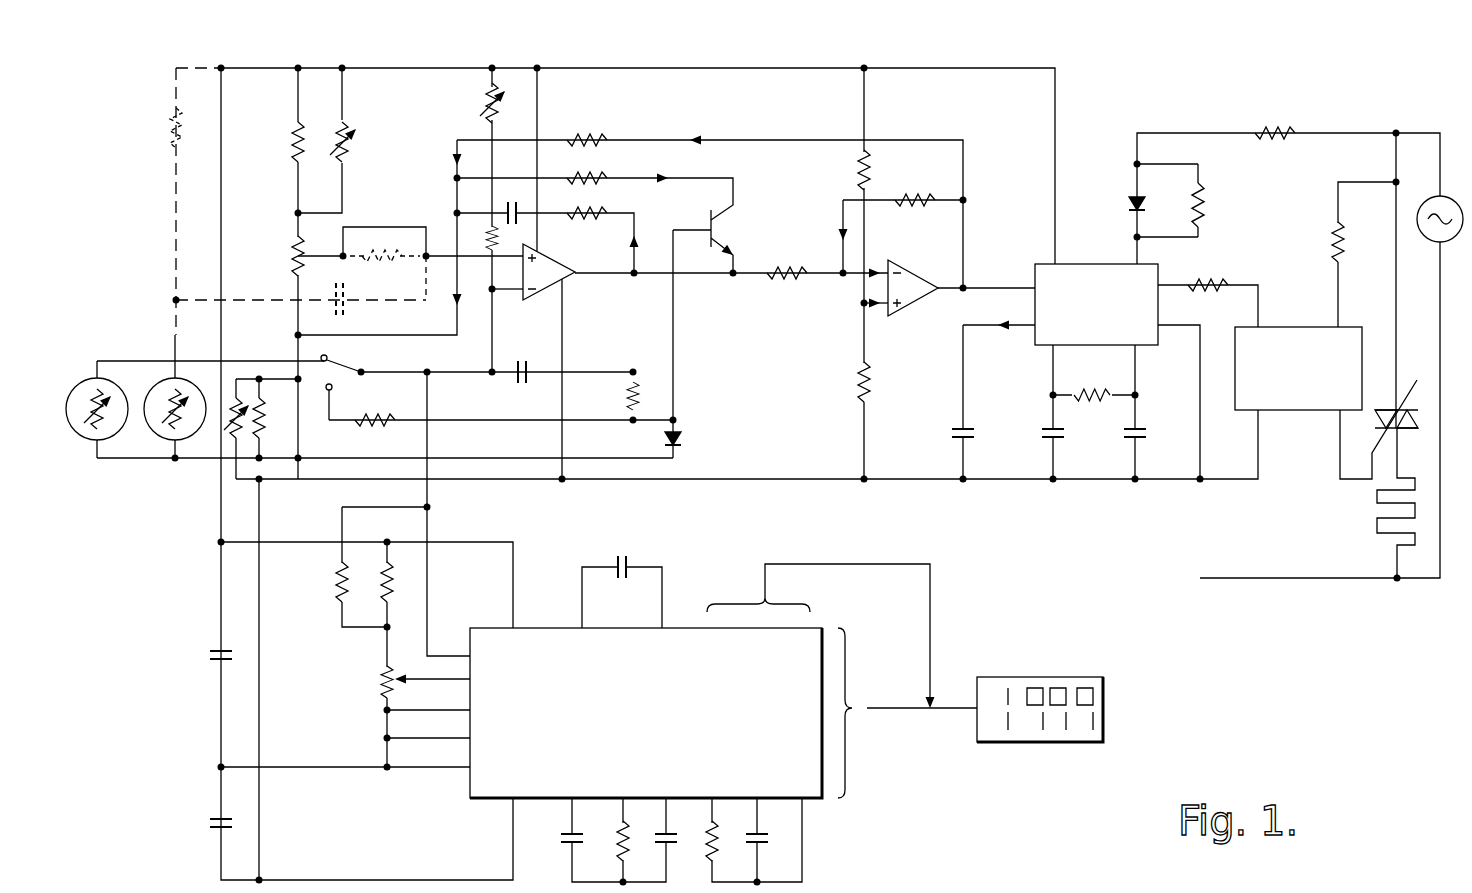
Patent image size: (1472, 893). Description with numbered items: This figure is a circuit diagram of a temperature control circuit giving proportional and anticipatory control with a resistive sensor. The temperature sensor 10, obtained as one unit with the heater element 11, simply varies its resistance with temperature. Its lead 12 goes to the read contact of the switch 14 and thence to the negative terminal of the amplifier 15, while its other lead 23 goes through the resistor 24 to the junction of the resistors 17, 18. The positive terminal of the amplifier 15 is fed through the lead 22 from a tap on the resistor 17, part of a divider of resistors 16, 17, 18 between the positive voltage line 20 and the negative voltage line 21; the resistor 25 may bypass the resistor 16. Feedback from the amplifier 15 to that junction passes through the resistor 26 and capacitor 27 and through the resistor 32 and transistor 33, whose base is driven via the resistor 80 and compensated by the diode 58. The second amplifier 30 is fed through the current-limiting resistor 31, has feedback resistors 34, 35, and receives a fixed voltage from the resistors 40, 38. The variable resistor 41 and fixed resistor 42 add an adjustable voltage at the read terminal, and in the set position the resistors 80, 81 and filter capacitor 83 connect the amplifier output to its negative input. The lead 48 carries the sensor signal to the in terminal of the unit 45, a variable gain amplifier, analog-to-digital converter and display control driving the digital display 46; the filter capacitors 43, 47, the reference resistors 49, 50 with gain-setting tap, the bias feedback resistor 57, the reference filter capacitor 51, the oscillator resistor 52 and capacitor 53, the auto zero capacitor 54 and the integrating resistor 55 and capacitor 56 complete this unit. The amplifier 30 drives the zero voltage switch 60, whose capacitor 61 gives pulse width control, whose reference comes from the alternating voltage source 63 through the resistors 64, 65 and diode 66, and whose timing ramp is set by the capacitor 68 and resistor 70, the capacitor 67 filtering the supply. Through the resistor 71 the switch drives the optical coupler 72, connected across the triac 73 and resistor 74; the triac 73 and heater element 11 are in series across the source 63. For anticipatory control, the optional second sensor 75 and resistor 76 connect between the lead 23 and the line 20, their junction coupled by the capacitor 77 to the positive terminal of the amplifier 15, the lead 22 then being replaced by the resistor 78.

The temperature sensor 10 is at (113, 385).
The heater element 11 is at (1377, 505).
The lead 12 is at (232, 360).
The switch 14 is at (372, 383).
The amplifier 15 is at (563, 278).
The resistor 16 is at (296, 138).
The resistor 17 is at (296, 256).
The resistor 18 is at (236, 442).
The positive voltage line 20 is at (655, 67).
The negative voltage line 21 is at (775, 482).
The lead 22 is at (370, 226).
The lead 23 is at (208, 458).
The resistor 24 is at (236, 395).
The resistor 25 is at (352, 148).
The resistor 26 is at (592, 226).
The capacitor 27 is at (516, 202).
The second amplifier 30 is at (900, 300).
The current-limiting resistor 31 is at (780, 282).
The resistor 32 is at (590, 180).
The transistor 33 is at (713, 228).
The resistor 34 is at (905, 198).
The resistor 35 is at (598, 135).
The resistor 38 is at (860, 382).
The resistor 40 is at (860, 170).
The variable resistor 41 is at (487, 102).
The fixed resistor 42 is at (488, 232).
The capacitor 43 is at (210, 655).
The unit 45 is at (680, 632).
The digital display 46 is at (1025, 680).
The capacitor 47 is at (240, 825).
The lead 48 is at (432, 537).
The resistor 49 is at (395, 590).
The resistor 50 is at (382, 686).
The capacitor 51 is at (584, 567).
The resistor 52 is at (710, 850).
The capacitor 53 is at (755, 848).
The auto zero capacitor 54 is at (563, 845).
The resistor 55 is at (615, 850).
The integrating capacitor 56 is at (663, 846).
The resistor 57 is at (337, 588).
The diode 58 is at (680, 438).
The zero voltage switch 60 is at (1094, 262).
The filter capacitor 61 is at (958, 430).
The alternating voltage source 63 is at (1433, 237).
The resistor 64 is at (1290, 130).
The high resistance resistor 65 is at (1205, 207).
The diode 66 is at (1130, 203).
The capacitor 67 is at (1143, 428).
The capacitor 68 is at (1048, 430).
The resistor 70 is at (1093, 405).
The resistor 71 is at (1218, 287).
The optical coupler 72 is at (1298, 330).
The triac 73 is at (1403, 394).
The resistor 74 is at (1333, 240).
The second temperature sensor 75 is at (160, 440).
The resistor 76 is at (168, 135).
The capacitor 77 is at (350, 312).
The resistor 78 is at (372, 262).
The resistor 80 is at (630, 398).
The resistor 81 is at (357, 426).
The capacitor 83 is at (520, 366).